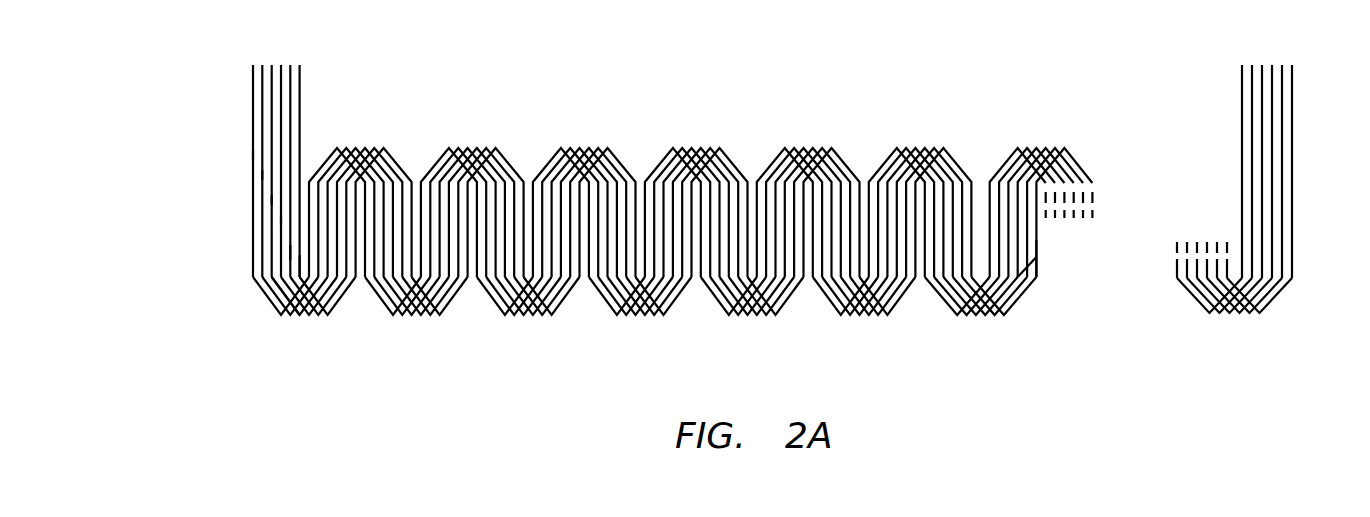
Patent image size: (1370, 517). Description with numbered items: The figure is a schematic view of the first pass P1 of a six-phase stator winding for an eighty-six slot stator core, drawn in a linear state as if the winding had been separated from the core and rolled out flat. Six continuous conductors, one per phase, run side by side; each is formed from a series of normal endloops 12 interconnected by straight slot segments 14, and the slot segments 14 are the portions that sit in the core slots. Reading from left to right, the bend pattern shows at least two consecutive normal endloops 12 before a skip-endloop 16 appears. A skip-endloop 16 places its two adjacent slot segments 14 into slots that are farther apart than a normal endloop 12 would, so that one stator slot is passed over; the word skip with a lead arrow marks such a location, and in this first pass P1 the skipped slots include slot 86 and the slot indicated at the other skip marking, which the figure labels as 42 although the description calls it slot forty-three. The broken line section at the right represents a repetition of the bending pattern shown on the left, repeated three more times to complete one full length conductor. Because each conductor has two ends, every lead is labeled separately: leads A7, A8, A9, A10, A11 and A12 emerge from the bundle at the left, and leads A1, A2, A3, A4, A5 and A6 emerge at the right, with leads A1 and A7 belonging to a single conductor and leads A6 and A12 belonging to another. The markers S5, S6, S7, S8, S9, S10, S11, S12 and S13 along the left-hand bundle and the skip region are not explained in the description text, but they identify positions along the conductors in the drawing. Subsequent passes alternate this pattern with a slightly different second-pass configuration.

The normal endloop 12 is at (500, 152).
The slot segment 14 is at (573, 228).
The skip-endloop 16 is at (618, 160).
The first pass P1 is at (1066, 232).
The slot 86 is at (980, 172).
The skip 42 is at (583, 282).
The lead A1 is at (1242, 76).
The lead A2 is at (1252, 122).
The lead A3 is at (1262, 155).
The lead A4 is at (1272, 86).
The lead A5 is at (1282, 103).
The lead A6 is at (1292, 137).
The lead A7 is at (253, 80).
The lead A8 is at (263, 111).
The lead A9 is at (272, 140).
The lead A10 is at (283, 86).
The lead A11 is at (291, 103).
The lead A12 is at (302, 130).
The slot S5 is at (1022, 266).
The slot S6 is at (1042, 255).
The slot S7 is at (253, 155).
The slot S8 is at (261, 176).
The slot S9 is at (271, 200).
The slot S10 is at (280, 220).
The slot S11 is at (297, 258).
The slot S12 is at (307, 274).
The slot S13 is at (278, 306).